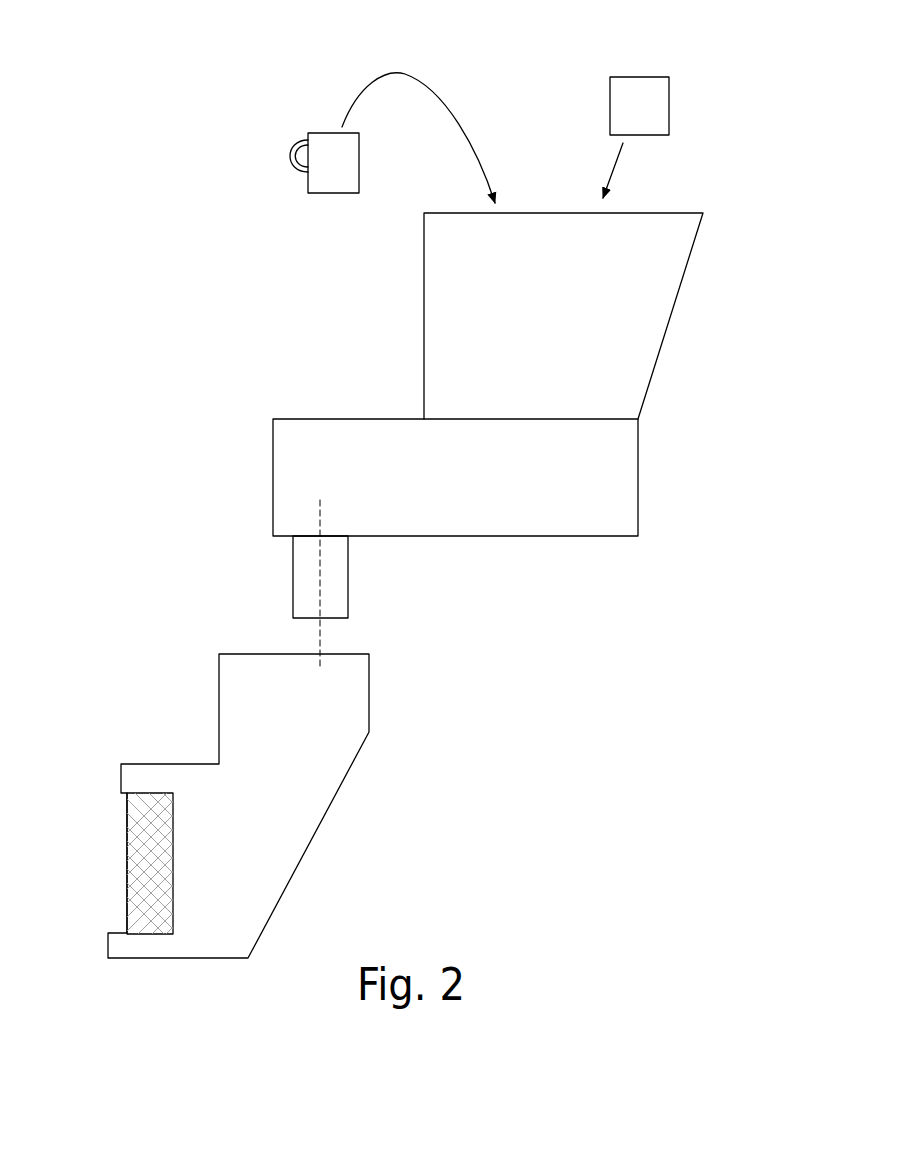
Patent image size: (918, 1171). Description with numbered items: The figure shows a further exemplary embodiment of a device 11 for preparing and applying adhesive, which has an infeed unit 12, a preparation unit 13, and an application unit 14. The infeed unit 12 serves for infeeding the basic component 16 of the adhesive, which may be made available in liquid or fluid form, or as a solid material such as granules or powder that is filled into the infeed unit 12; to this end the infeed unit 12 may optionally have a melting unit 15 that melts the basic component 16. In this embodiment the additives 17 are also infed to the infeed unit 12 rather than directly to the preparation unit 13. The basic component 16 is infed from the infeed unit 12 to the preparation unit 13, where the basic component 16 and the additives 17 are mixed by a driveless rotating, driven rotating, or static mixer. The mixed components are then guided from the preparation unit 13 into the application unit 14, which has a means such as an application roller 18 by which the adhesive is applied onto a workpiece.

The device 11 is at (184, 406).
The infeed unit 12 is at (670, 287).
The preparation unit 13 is at (349, 573).
The application unit 14 is at (332, 803).
The melting unit 15 is at (640, 476).
The basic component 16 is at (641, 88).
The additives 17 is at (325, 145).
The application roller 18 is at (133, 850).